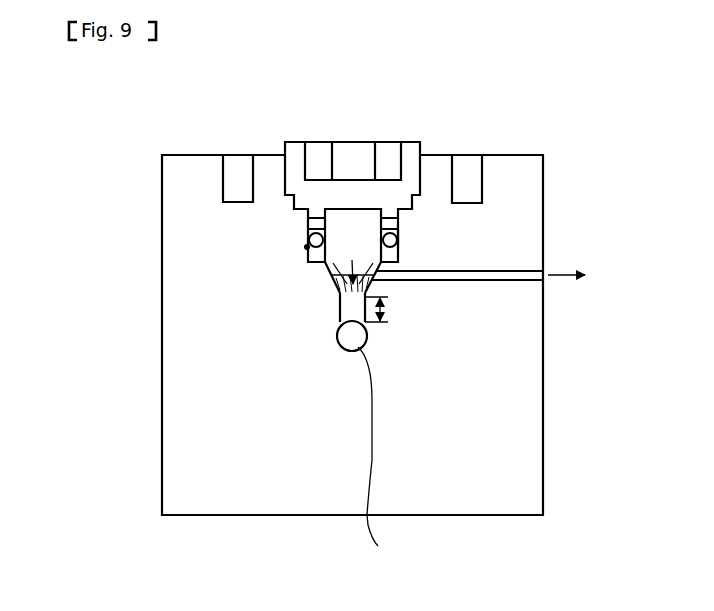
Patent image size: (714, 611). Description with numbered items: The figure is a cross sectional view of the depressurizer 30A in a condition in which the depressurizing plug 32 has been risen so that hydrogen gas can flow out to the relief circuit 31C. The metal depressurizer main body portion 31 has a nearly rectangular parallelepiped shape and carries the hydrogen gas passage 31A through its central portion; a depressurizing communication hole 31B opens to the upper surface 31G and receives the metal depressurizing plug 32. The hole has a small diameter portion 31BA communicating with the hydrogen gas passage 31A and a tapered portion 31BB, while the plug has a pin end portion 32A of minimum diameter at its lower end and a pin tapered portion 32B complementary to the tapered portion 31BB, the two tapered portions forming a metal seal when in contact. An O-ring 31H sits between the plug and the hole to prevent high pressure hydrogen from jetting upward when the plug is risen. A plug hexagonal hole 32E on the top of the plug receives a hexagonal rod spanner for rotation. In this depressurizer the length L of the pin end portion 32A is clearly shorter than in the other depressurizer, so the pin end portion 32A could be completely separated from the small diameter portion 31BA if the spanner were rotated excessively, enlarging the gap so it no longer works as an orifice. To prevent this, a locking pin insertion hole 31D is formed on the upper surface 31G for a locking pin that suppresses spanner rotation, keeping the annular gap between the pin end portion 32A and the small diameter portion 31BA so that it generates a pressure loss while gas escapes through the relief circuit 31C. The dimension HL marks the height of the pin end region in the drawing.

The depressurizer 30A is at (172, 112).
The depressurizer main body portion 31 is at (187, 515).
The hydrogen gas passage 31A is at (381, 468).
The depressurizing communication hole 31B is at (312, 200).
The small diameter portion 31BA is at (338, 320).
The tapered portion 31BB is at (385, 268).
The relief circuit 31C is at (478, 277).
The locking pin insertion hole 31D is at (480, 168).
The upper surface 31G is at (515, 156).
The O-ring 31H is at (399, 238).
The depressurizing plug 32 is at (408, 143).
The pin end portion 32A is at (338, 293).
The pin tapered portion 32B is at (324, 263).
The plug hexagonal hole 32E is at (308, 147).
The length of the pin end portion L is at (352, 261).
The height HL is at (390, 310).